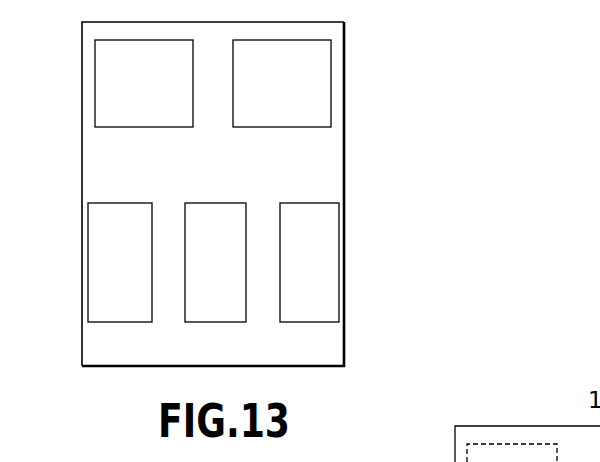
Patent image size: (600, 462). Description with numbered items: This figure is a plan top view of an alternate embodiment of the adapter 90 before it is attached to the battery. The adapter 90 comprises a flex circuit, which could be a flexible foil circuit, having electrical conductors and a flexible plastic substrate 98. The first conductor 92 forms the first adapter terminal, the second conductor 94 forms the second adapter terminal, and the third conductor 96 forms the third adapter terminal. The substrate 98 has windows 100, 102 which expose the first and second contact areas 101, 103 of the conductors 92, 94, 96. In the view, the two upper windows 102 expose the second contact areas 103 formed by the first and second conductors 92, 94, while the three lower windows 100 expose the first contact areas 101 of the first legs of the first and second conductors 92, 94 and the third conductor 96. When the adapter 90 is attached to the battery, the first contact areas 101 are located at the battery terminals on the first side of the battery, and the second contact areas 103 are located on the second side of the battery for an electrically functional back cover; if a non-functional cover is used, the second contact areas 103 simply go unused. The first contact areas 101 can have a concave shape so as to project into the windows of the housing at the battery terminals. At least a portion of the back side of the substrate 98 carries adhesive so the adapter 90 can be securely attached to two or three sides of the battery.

The adapter 90 is at (449, 66).
The first conductor 92 is at (118, 118).
The second conductor 94 is at (305, 115).
The third conductor 96 is at (207, 307).
The flexible plastic substrate 98 is at (110, 167).
The window 100 is at (82, 275).
The first contact area 101 is at (200, 240).
The window 102 is at (95, 102).
The second contact area 103 is at (122, 76).